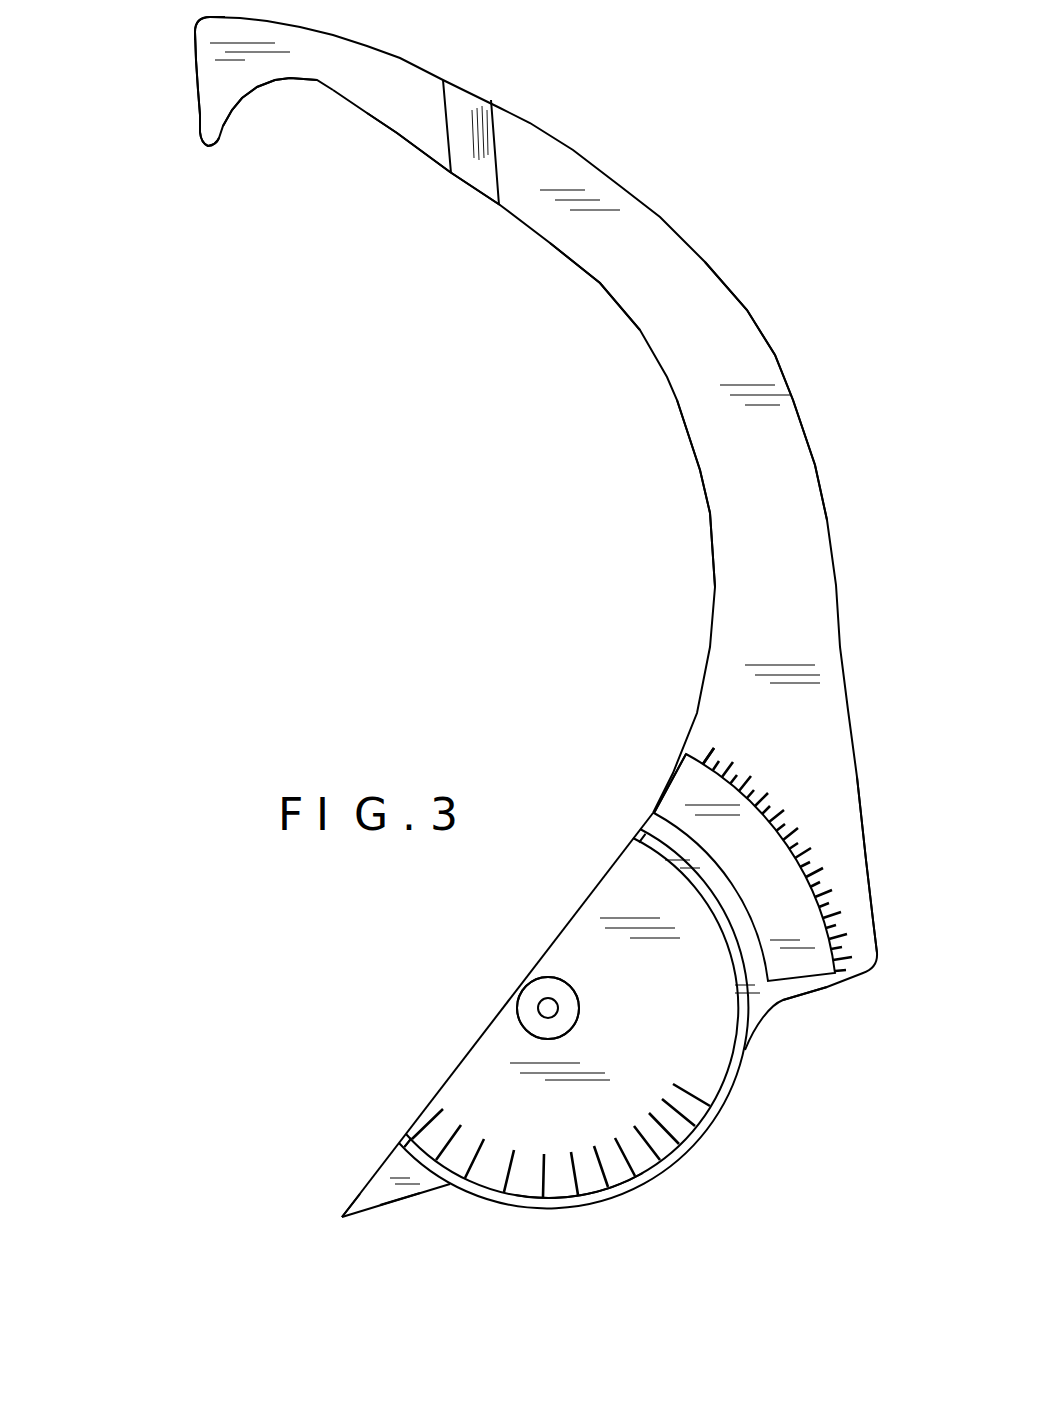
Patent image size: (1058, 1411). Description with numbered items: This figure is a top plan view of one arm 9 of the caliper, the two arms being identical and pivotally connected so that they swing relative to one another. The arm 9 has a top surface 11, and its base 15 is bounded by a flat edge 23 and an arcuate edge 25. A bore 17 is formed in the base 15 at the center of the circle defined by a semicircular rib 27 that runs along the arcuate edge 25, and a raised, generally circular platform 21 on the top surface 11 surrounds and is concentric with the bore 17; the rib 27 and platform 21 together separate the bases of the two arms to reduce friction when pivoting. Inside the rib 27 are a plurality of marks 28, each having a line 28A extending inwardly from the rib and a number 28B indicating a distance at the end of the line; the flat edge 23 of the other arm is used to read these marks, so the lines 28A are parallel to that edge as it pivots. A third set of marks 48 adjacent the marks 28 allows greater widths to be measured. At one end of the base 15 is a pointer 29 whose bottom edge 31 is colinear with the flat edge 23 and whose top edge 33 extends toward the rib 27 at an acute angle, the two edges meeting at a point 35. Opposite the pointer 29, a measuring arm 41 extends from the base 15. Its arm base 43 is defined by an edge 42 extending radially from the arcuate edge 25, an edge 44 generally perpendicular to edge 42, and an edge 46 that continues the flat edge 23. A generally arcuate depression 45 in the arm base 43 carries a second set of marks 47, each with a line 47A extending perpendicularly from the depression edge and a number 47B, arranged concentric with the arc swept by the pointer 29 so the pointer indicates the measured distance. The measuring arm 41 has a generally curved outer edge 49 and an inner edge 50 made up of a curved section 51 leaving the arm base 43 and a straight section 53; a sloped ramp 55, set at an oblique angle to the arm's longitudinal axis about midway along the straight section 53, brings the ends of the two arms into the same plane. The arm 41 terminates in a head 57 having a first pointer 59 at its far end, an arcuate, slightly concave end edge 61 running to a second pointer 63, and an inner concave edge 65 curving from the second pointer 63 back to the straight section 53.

The arm 9 is at (524, 451).
The top surface 11 is at (770, 534).
The base 15 is at (575, 1022).
The bore 17 is at (541, 961).
The platform 21 is at (499, 989).
The flat edge 23 is at (523, 978).
The arcuate edge 25 is at (603, 1018).
The semicircular rib 27 is at (599, 1190).
The marks 28 is at (578, 1168).
The line 28A is at (723, 1099).
The number 28B is at (713, 1068).
The pointer 29 is at (448, 1230).
The bottom edge 31 is at (447, 1015).
The top edge 33 is at (396, 1230).
The point 35 is at (299, 1225).
The measuring arm 41 is at (543, 485).
The edge 42 is at (808, 1033).
The arm base 43 is at (811, 1003).
The edge 44 is at (882, 865).
The arcuate depression 45 is at (744, 867).
The edge 46 is at (637, 782).
The second set of marks 47 is at (802, 837).
The line 47A is at (663, 725).
The number 47B is at (692, 693).
The third set of marks 48 is at (453, 1183).
The outer edge 49 is at (781, 391).
The inner edge 50 is at (556, 289).
The curved section 51 is at (646, 493).
The straight section 53 is at (419, 159).
The ramp 55 is at (531, 135).
The head 57 is at (187, 81).
The first pointer 59 is at (155, 22).
The end edge 61 is at (139, 86).
The second pointer 63 is at (172, 170).
The inner concave edge 65 is at (270, 124).